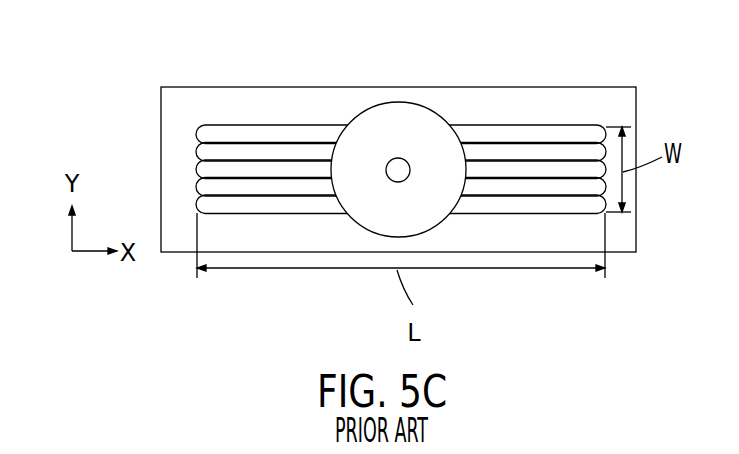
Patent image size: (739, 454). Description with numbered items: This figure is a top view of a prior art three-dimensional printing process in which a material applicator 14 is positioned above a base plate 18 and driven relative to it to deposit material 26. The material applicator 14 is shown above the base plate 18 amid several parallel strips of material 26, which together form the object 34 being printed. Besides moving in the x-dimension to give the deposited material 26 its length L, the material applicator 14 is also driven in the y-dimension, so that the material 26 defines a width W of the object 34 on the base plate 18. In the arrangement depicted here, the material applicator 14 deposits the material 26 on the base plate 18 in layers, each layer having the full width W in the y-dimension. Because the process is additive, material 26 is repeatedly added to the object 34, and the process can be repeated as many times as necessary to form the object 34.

The material applicator 14 is at (441, 103).
The base plate 18 is at (577, 102).
The material 26 is at (488, 130).
The object 34 is at (212, 125).